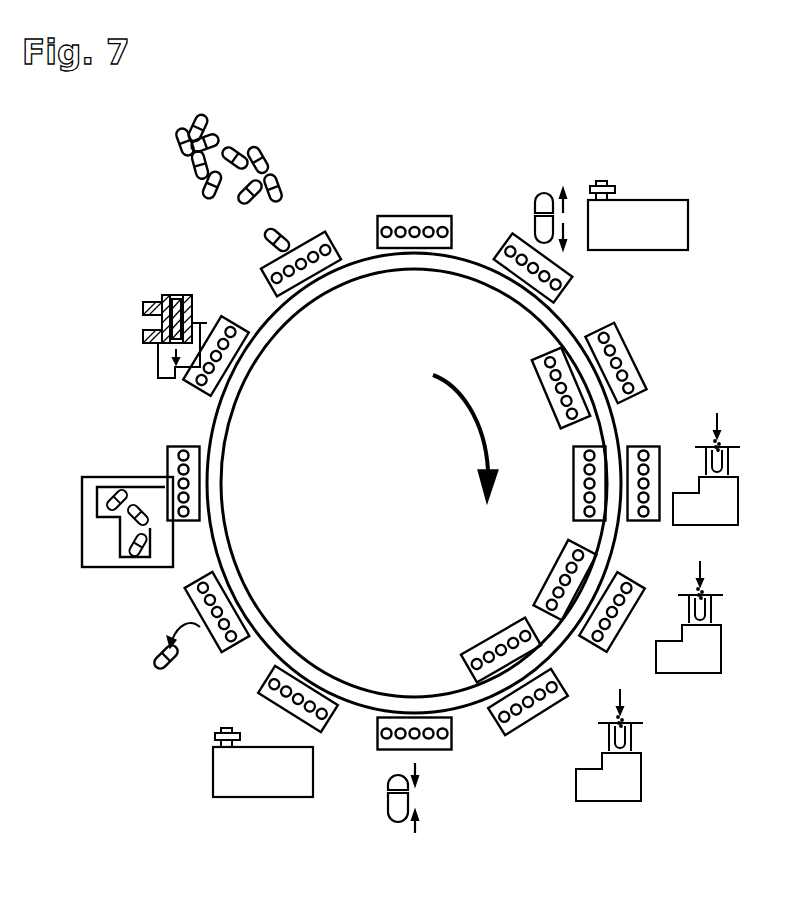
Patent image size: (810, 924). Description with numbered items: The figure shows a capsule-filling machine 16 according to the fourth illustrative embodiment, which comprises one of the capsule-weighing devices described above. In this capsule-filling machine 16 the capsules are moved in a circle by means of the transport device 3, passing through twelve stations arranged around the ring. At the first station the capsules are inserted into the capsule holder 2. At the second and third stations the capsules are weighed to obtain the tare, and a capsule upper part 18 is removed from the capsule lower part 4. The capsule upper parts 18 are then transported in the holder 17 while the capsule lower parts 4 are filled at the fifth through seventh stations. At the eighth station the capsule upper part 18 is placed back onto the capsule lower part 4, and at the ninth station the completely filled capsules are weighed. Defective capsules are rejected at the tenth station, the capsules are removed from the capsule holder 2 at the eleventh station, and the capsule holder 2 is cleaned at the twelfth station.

The capsule-filling machine 16 is at (367, 162).
The transport device 3 is at (563, 331).
The capsule holder 2 is at (628, 360).
The holder 17 is at (477, 687).
The capsule upper part 18 is at (388, 783).
The capsule lower part 4 is at (398, 815).